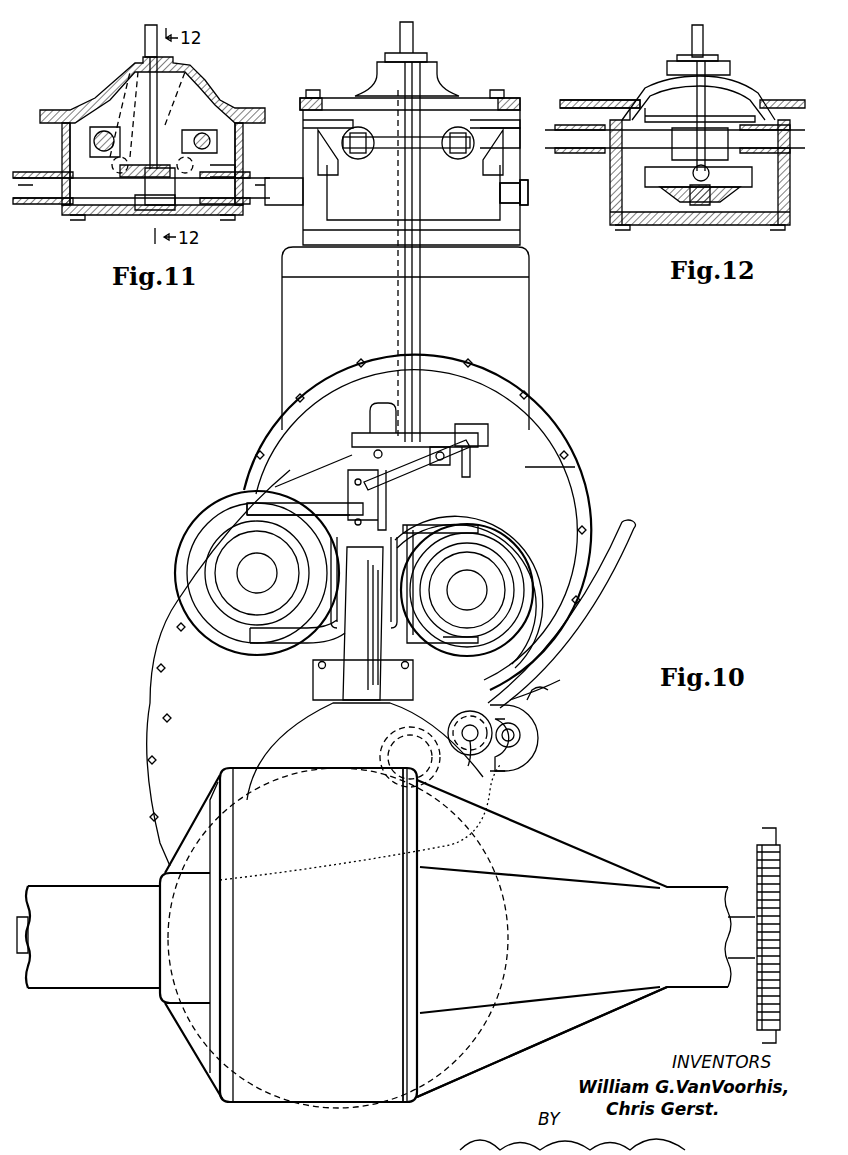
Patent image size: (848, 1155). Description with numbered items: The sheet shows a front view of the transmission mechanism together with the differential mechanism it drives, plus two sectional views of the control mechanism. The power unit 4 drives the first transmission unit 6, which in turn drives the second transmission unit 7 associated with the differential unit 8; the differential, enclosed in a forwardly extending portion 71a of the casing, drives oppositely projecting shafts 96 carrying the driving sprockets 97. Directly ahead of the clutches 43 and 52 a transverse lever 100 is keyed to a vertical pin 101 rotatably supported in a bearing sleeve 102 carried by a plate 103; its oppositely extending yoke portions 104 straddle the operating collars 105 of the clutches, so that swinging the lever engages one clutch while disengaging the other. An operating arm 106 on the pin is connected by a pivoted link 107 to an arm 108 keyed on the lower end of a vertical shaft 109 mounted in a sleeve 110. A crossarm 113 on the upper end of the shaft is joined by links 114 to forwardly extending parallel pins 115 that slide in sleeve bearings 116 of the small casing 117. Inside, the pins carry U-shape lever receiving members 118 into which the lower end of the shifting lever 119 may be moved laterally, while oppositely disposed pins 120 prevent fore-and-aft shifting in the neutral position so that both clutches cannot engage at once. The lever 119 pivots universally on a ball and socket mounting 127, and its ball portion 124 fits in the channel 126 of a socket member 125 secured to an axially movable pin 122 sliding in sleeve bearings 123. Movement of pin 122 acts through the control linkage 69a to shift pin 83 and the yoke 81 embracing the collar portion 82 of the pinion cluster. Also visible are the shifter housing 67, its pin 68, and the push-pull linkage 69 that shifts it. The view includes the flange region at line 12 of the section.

In FIG. 10, the power unit 4 is at (282, 326).
In FIG. 10, the first transmission unit 6 is at (316, 470).
In FIG. 10, the second transmission unit 7 is at (248, 753).
In FIG. 10, the differential unit 8 is at (406, 1108).
In FIG. 10, the flange ring 12 is at (520, 432).
In FIG. 10, the clutch unit 43 is at (494, 511).
In FIG. 10, the clutch unit 52 is at (223, 496).
In FIG. 10, the shifter housing 67 is at (538, 742).
In FIG. 10, the pin 68 is at (521, 732).
In FIG. 10, the push-pull linkage 69 is at (545, 690).
In FIG. 10, the control linkage 69a is at (528, 192).
In FIG. 10, the forwardly extending portion of the casing 71a is at (412, 1036).
In FIG. 10, the yoke 81 is at (446, 734).
In FIG. 10, the collar portion 82 is at (386, 756).
In FIG. 10, the pin 83 is at (471, 762).
In FIG. 10, the oppositely projecting shafts 96 is at (738, 917).
In FIG. 10, the driving sprockets 97 is at (758, 844).
In FIG. 10, the lever 100 is at (378, 515).
In FIG. 10, the pin 101 is at (350, 447).
In FIG. 10, the bearing sleeve 102 is at (350, 640).
In FIG. 10, the plate 103 is at (434, 464).
In FIG. 10, the yoke portions 104 is at (322, 588).
In FIG. 10, the operating collars 105 is at (207, 562).
In FIG. 10, the operating arm 106 is at (470, 460).
In FIG. 10, the pivoted link 107 is at (462, 432).
In FIG. 10, the arm 108 is at (438, 417).
In FIG. 10, the shaft 109 is at (396, 262).
In FIG. 10, the sleeve 110 is at (403, 295).
In FIG. 10, the crossarm 113 is at (432, 148).
In FIG. 10, the links 114 is at (346, 158).
In FIG. 11, the pins 115 is at (77, 150).
In FIG. 12, the pins 115 is at (584, 148).
In FIG. 10, the sleeve bearings 116 is at (362, 128).
In FIG. 12, the sleeve bearings 116 is at (608, 120).
In FIG. 10, the small casing 117 is at (482, 138).
In FIG. 11, the small casing 117 is at (226, 158).
In FIG. 12, the small casing 117 is at (612, 202).
In FIG. 11, the U-shape lever receiving members 118 is at (95, 125).
In FIG. 12, the U-shape lever receiving members 118 is at (704, 158).
In FIG. 11, the shifting lever 119 is at (148, 38).
In FIG. 12, the shifting lever 119 is at (704, 40).
In FIG. 12, the pins 120 is at (654, 126).
In FIG. 10, the axially movable pin 122 is at (500, 203).
In FIG. 11, the axially movable pin 122 is at (74, 198).
In FIG. 12, the axially movable pin 122 is at (710, 194).
In FIG. 11, the sleeve bearings 123 is at (220, 200).
In FIG. 11, the ball portion 124 is at (148, 210).
In FIG. 11, the socket member 125 is at (130, 215).
In FIG. 12, the socket member 125 is at (680, 202).
In FIG. 12, the channel 126 is at (645, 175).
In FIG. 11, the ball and socket mounting 127 is at (170, 66).